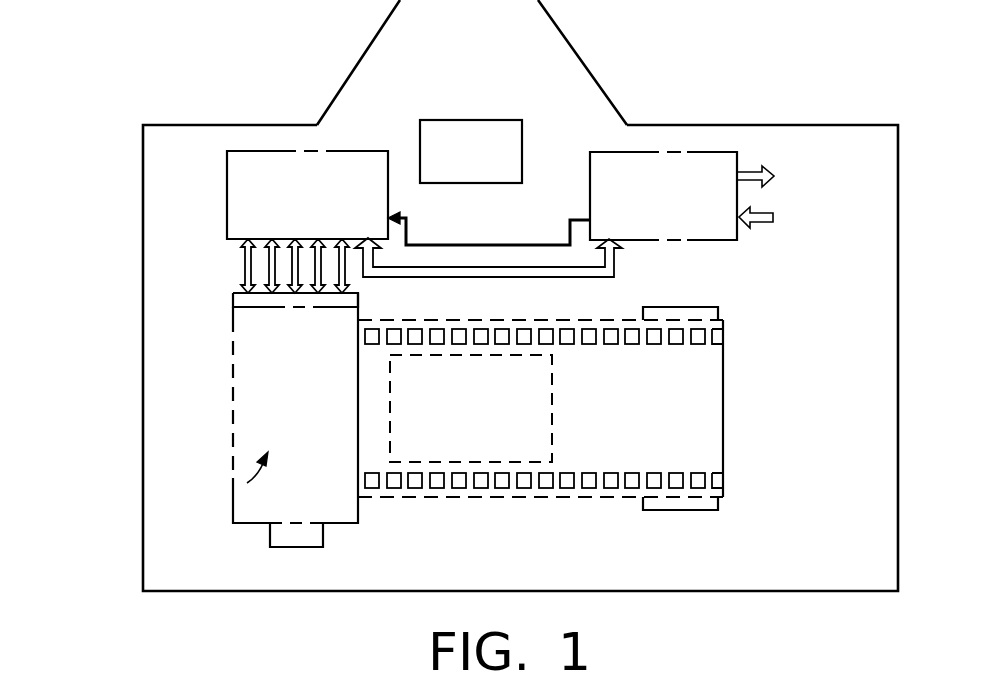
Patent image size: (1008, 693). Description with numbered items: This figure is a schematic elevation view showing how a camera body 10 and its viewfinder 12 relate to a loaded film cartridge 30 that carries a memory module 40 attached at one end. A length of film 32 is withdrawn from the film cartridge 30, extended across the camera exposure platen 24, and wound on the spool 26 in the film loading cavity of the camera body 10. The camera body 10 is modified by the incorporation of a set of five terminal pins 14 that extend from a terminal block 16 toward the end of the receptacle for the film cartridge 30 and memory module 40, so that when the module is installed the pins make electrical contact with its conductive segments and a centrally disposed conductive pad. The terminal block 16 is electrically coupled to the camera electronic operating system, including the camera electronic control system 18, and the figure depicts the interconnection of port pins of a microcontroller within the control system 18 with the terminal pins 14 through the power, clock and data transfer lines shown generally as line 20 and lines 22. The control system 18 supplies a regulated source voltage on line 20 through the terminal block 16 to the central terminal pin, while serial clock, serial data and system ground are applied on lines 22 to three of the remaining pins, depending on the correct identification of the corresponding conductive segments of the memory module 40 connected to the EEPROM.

The camera body 10 is at (853, 124).
The viewfinder 12 is at (503, 118).
The terminal pins 14 is at (243, 260).
The terminal block 16 is at (340, 147).
The camera electronic control system 18 is at (715, 150).
The power line 20 is at (510, 243).
The clock and data transfer lines 22 is at (465, 265).
The camera exposure platen 24 is at (552, 370).
The spool 26 is at (722, 310).
The film cartridge 30 is at (240, 487).
The film 32 is at (723, 424).
The memory module 40 is at (232, 300).